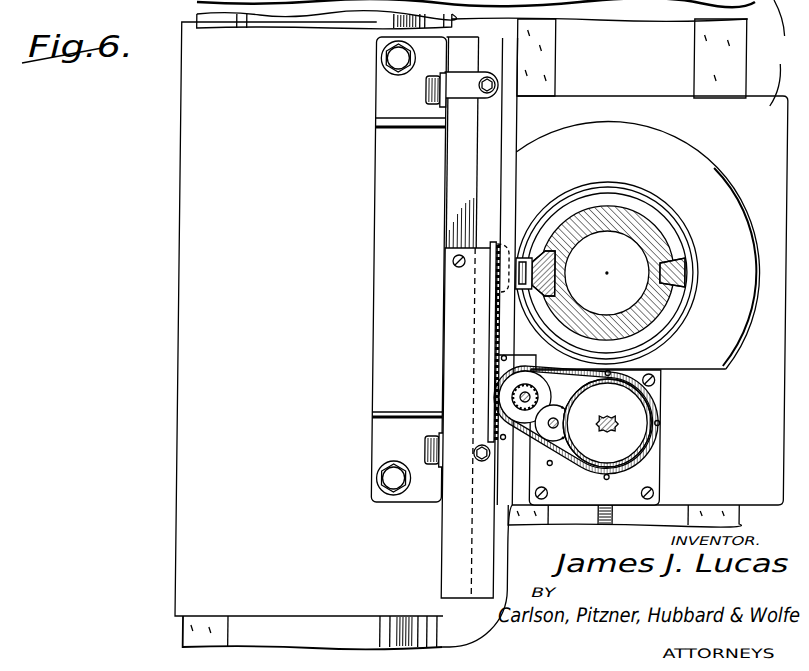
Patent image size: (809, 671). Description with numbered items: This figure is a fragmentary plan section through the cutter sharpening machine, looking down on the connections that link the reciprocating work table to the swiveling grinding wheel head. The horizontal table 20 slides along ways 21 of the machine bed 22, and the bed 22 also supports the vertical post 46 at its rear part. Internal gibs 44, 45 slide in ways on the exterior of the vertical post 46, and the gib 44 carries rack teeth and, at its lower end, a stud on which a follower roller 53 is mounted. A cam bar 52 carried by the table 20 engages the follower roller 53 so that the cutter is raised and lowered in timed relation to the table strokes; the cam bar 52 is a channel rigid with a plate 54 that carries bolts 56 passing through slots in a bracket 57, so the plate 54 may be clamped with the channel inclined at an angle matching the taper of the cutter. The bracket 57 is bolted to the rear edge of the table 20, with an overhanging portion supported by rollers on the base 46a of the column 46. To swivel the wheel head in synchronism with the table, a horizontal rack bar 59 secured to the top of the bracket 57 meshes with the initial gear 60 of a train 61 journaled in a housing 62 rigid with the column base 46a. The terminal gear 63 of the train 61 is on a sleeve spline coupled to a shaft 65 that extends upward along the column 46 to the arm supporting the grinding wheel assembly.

The horizontal table 20 is at (193, 447).
The ways 21 is at (402, 628).
The machine bed 22 is at (289, 628).
The internal gib 44 is at (553, 250).
The internal gib 45 is at (690, 271).
The vertical post 46 is at (614, 215).
The base of the column 46a is at (786, 53).
The cam bar 52 is at (513, 117).
The follower roller 53 is at (511, 245).
The plate 54 is at (489, 153).
The bolts 56 is at (427, 89).
The bracket 57 is at (388, 322).
The horizontal rack bar 59 is at (450, 559).
The initial gear 60 is at (505, 388).
The train 61 is at (571, 456).
The housing 62 is at (660, 406).
The terminal gear 63 is at (640, 436).
The shaft 65 is at (616, 394).